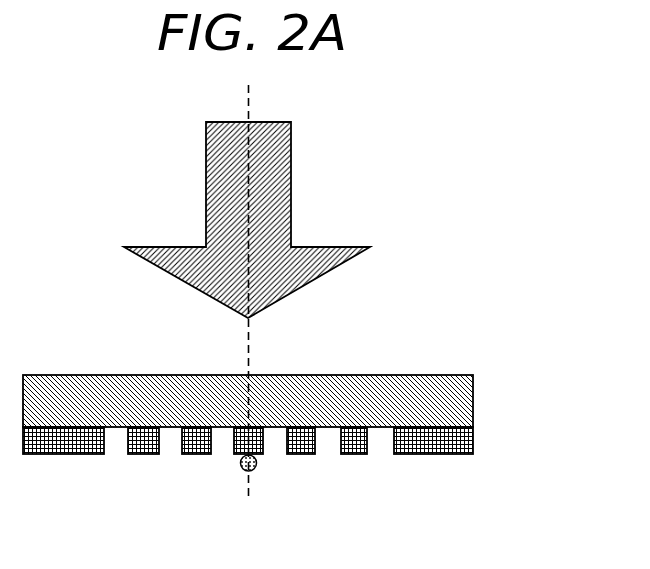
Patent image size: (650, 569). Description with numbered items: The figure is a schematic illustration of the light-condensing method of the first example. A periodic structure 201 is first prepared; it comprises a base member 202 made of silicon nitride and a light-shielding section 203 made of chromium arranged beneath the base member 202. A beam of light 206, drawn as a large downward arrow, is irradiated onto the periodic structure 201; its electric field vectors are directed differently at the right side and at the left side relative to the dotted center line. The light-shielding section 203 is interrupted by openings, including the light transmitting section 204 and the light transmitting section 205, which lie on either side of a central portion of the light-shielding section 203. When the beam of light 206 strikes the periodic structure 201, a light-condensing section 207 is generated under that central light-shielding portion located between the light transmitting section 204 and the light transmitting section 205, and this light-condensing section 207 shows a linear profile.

The periodic structure 201 is at (299, 373).
The base member 202 is at (462, 388).
The light-shielding section 203 is at (462, 438).
The light transmitting section 204 is at (272, 443).
The light transmitting section 205 is at (224, 442).
The beam of light 206 is at (282, 161).
The light-condensing section 207 is at (244, 472).